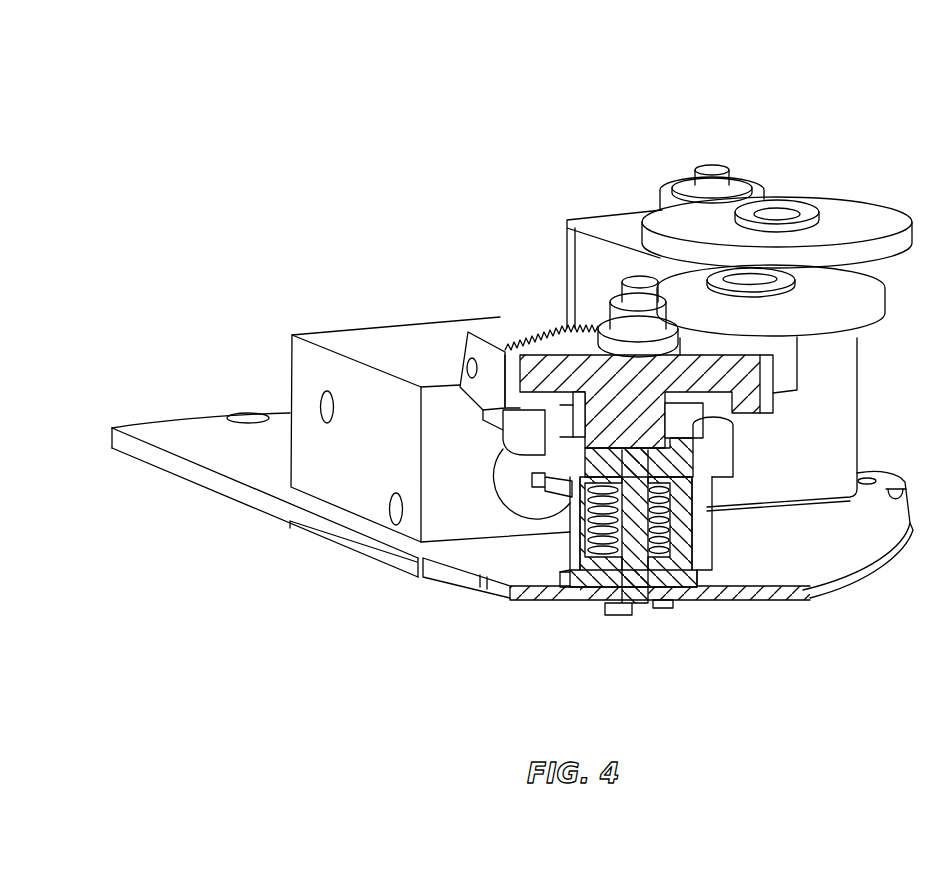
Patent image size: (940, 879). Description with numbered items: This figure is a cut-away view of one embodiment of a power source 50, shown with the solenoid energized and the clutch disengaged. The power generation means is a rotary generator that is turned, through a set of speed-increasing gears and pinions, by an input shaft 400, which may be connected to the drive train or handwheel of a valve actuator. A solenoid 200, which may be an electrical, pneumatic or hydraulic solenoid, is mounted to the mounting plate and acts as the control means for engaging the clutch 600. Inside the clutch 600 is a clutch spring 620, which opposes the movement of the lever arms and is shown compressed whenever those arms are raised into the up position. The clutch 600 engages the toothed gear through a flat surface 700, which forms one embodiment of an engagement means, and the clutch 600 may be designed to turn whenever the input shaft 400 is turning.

The power source 50 is at (840, 136).
The solenoid 200 is at (450, 422).
The input shaft 400 is at (648, 597).
The clutch 600 is at (702, 542).
The clutch spring 620 is at (585, 560).
The flat surface 700 is at (680, 427).